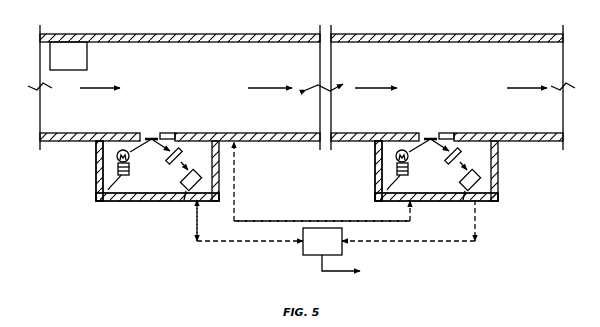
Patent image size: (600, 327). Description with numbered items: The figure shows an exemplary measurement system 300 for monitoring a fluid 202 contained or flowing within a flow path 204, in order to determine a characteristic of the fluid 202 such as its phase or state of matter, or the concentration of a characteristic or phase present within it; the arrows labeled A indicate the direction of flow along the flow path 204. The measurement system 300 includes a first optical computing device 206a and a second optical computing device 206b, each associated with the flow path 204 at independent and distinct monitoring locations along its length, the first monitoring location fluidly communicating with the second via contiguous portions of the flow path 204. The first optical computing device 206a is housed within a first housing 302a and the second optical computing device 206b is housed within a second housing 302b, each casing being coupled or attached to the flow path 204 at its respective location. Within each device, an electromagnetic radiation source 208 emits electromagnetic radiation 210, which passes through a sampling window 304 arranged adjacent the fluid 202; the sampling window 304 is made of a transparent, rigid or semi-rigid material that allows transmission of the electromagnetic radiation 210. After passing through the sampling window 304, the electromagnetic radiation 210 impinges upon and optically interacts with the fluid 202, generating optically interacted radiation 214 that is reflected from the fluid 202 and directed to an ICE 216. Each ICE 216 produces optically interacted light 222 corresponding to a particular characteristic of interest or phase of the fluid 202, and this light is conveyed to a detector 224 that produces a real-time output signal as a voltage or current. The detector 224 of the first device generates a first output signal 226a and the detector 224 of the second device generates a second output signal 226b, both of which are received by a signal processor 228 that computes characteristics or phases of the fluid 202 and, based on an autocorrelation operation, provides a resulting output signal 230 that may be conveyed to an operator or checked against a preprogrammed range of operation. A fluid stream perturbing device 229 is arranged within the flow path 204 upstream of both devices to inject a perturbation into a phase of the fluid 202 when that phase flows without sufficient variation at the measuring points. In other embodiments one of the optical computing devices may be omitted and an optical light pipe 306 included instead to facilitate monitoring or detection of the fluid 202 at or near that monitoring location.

The fluid 202 is at (248, 63).
The flow path 204 is at (438, 34).
The first optical computing device 206a is at (84, 163).
The second optical computing device 206b is at (510, 173).
The electromagnetic radiation source 208 is at (99, 200).
The electromagnetic radiation 210 is at (150, 136).
The optically interacted radiation 214 is at (172, 153).
The ICE 216 is at (188, 134).
The optically interacted light 222 is at (183, 174).
The detector 224 is at (172, 200).
The first output signal 226a is at (228, 242).
The second output signal 226b is at (441, 242).
The signal processor 228 is at (334, 249).
The fluid stream perturbing device 229 is at (80, 63).
The resulting output signal 230 is at (337, 272).
The measurement system 300 is at (118, 230).
The first housing 302a is at (208, 202).
The second housing 302b is at (375, 166).
The sampling window 304 is at (166, 132).
The optical light pipe 306 is at (281, 221).
The flow direction A is at (100, 87).